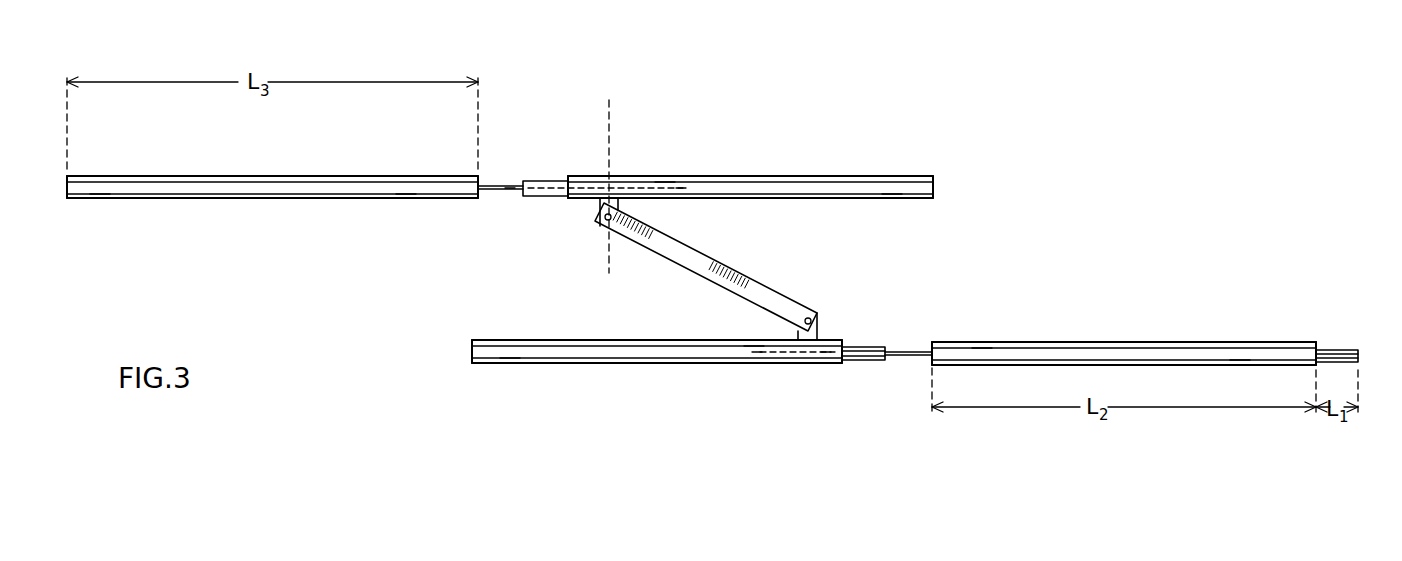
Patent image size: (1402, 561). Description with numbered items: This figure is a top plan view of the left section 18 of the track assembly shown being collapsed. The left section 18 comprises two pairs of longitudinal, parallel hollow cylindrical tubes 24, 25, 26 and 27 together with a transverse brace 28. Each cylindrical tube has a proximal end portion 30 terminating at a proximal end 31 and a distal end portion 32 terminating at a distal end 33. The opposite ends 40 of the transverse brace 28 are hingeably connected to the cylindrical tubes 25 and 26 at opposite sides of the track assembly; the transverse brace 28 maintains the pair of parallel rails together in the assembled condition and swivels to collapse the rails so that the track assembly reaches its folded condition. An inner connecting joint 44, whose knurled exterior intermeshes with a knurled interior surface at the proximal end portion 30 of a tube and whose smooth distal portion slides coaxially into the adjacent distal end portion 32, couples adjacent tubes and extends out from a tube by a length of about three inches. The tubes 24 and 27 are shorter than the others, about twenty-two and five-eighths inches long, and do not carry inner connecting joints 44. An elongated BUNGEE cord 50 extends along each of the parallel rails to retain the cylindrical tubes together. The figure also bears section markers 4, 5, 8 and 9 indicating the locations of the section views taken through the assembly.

The left section 18 is at (711, 115).
The hollow cylindrical tube 24 is at (279, 176).
The hollow cylindrical tube 25 is at (593, 366).
The hollow cylindrical tube 26 is at (766, 177).
The hollow cylindrical tube 27 is at (1097, 343).
The transverse brace 28 is at (700, 252).
The proximal end portion 30 is at (100, 190).
The proximal end 31 is at (66, 183).
The distal end portion 32 is at (406, 190).
The distal end 33 is at (480, 178).
The opposite ends of the transverse brace 40 is at (619, 223).
The inner connecting joint 44 is at (536, 181).
The BUNGEE cord 50 is at (492, 190).
The section line 4 is at (826, 354).
The section line 5 is at (510, 192).
The section line 8 is at (609, 105).
The section line 9 is at (757, 354).